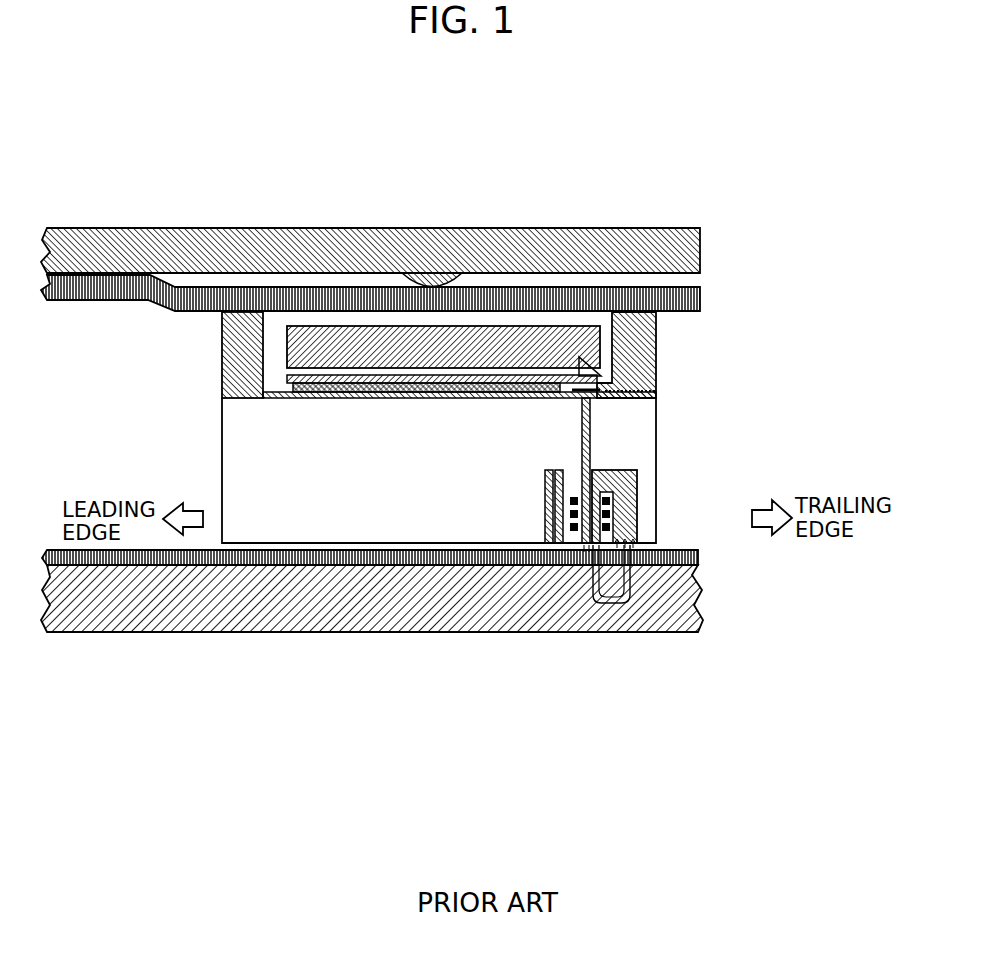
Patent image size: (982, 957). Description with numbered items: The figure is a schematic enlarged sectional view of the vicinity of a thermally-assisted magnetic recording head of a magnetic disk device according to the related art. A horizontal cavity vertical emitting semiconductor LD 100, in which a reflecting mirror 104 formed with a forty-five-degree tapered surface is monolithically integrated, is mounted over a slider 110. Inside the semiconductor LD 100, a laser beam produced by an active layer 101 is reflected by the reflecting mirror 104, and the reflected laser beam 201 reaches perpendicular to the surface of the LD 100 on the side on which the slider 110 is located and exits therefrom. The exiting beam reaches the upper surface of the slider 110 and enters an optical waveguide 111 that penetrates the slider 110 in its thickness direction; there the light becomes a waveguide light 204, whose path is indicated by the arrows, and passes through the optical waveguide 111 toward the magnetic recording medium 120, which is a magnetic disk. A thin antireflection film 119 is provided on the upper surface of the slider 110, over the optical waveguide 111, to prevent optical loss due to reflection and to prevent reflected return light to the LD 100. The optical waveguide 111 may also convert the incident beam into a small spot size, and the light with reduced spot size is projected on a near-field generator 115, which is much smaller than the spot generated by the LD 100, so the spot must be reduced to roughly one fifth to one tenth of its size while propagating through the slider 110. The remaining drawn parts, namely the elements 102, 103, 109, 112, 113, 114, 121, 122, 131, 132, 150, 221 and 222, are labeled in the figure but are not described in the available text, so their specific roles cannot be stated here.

The horizontal cavity vertical emitting semiconductor LD 100 is at (285, 353).
The active layer 101 is at (372, 370).
The pressure chamber 102 is at (323, 355).
The electrode 103 is at (525, 353).
The reflecting mirror 104 is at (615, 350).
The vibration plate 109 is at (398, 382).
The slider 110 is at (315, 522).
The optical waveguide 111 is at (590, 424).
The driver block 112 is at (618, 483).
The terminal section 113 is at (605, 515).
The support member 114 is at (545, 543).
The near-field generator 115 is at (583, 550).
The antireflection film 119 is at (600, 397).
The magnetic recording medium 120 is at (810, 562).
The nozzle plate 121 is at (472, 265).
The adhesive layer 122 is at (688, 300).
The substrate 131 is at (370, 600).
The wiring layer 132 is at (690, 557).
The frame wall 150 is at (648, 330).
The reflected laser beam 201 is at (588, 389).
The waveguide light 204 is at (592, 450).
The base substrate 221 is at (693, 597).
The wiring loop 222 is at (593, 600).